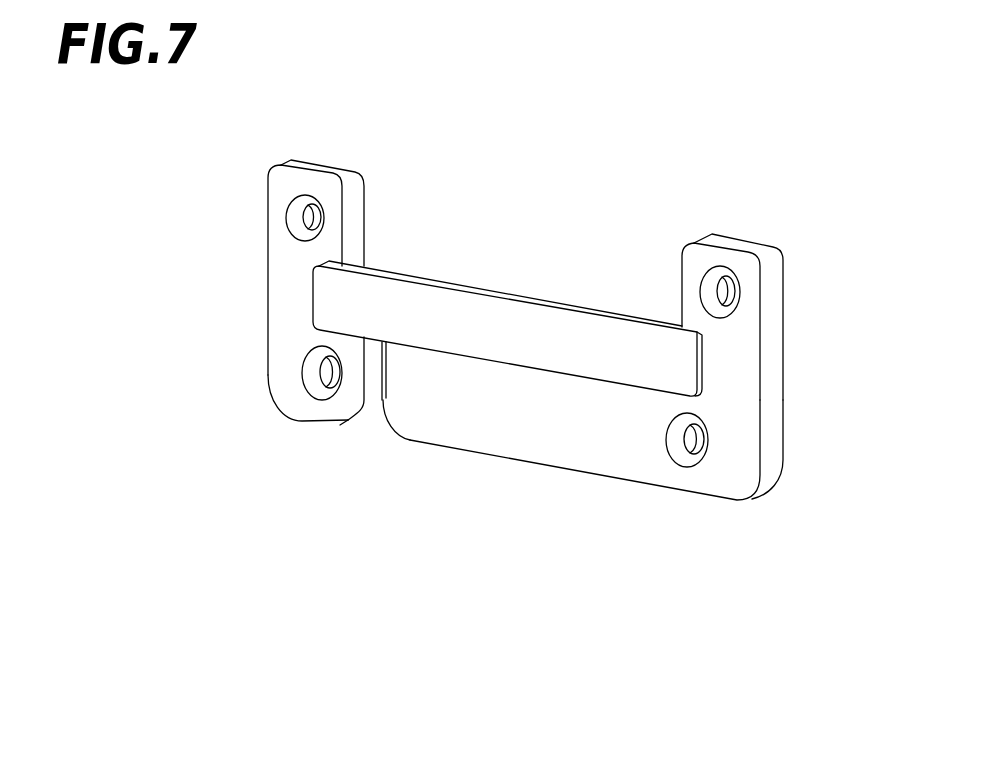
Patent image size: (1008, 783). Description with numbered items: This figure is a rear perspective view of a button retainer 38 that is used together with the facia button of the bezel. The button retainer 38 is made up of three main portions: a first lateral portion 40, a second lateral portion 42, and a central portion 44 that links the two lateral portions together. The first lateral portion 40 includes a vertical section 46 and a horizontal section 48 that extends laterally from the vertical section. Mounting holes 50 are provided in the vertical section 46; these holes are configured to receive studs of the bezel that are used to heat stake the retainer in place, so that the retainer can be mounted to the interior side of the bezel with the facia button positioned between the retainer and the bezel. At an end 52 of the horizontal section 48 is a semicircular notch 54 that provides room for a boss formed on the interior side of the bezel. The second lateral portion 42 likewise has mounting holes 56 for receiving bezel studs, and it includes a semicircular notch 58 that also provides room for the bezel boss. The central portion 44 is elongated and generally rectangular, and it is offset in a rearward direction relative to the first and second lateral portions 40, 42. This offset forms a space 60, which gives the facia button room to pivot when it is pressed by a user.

The button retainer 38 is at (761, 127).
The first lateral portion 40 is at (743, 385).
The second lateral portion 42 is at (285, 290).
The central portion 44 is at (530, 297).
The vertical section 46 is at (748, 367).
The horizontal section 48 is at (527, 432).
The mounting holes 50 is at (699, 268).
The end 52 is at (387, 476).
The semicircular notch 54 is at (408, 437).
The mounting holes 56 is at (289, 235).
The semicircular notch 58 is at (350, 418).
The space 60 is at (396, 240).